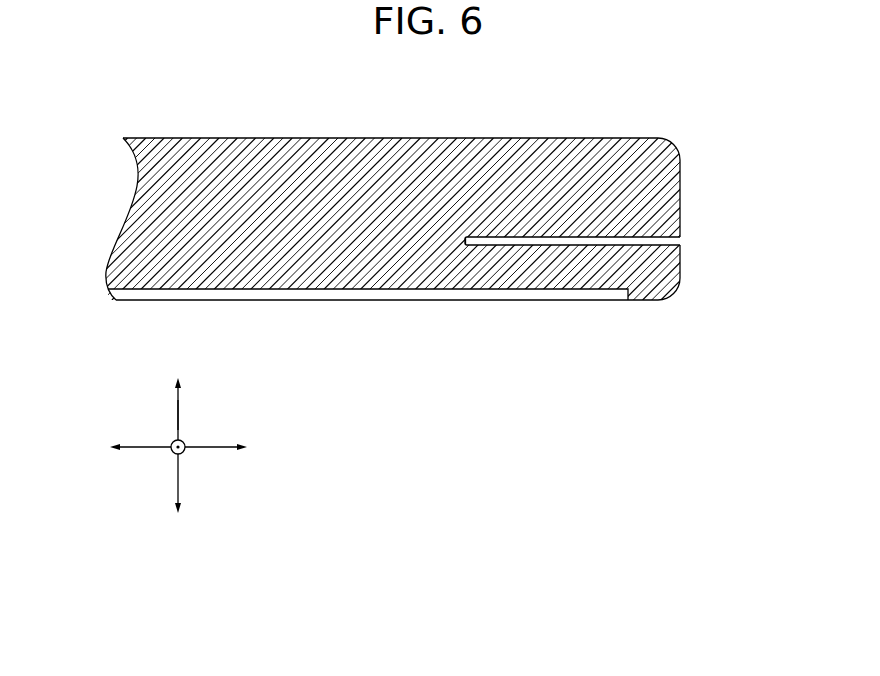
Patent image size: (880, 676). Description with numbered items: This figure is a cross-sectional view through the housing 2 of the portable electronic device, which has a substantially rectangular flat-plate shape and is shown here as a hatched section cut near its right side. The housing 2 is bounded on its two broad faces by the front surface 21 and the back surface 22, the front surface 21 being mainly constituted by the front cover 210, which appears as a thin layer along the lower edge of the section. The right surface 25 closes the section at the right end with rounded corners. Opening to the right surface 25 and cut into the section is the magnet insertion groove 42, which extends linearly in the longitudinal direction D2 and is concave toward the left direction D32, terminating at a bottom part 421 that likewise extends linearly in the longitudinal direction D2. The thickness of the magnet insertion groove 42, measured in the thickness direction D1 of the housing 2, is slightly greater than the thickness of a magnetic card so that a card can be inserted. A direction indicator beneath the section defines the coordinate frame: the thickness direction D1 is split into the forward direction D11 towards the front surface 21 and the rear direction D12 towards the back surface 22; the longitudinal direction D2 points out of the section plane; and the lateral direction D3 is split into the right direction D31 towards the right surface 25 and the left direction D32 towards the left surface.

The housing 2 is at (186, 98).
The back surface 22 is at (426, 137).
The right surface 25 is at (682, 189).
The magnet insertion groove 42 is at (682, 243).
The bottom part 421 is at (468, 246).
The front surface 21 is at (285, 301).
The front cover 210 is at (365, 290).
The thickness direction D1 is at (180, 420).
The forward direction D11 is at (177, 500).
The rear direction D12 is at (177, 392).
The longitudinal direction D2 is at (190, 452).
The lateral direction D3 is at (157, 450).
The right direction D31 is at (244, 448).
The left direction D32 is at (114, 448).